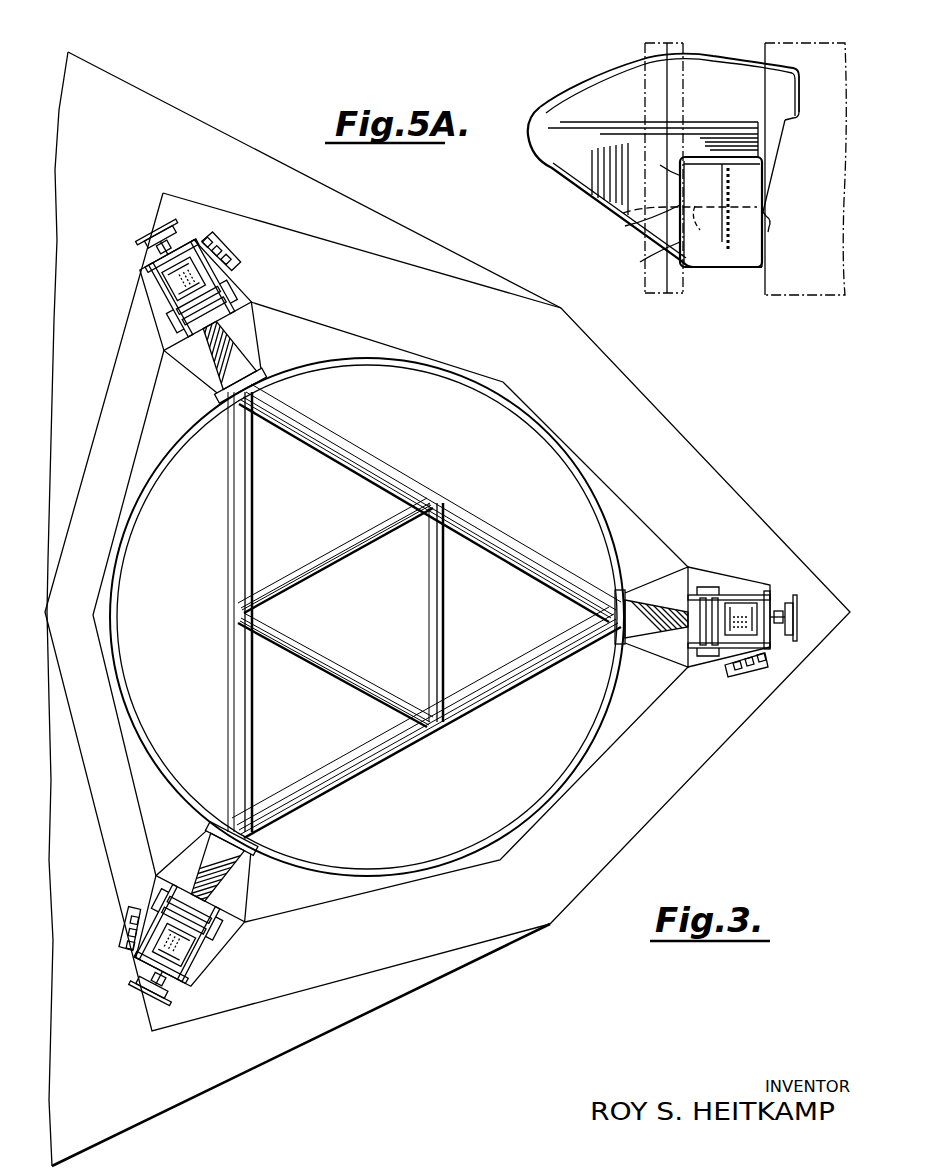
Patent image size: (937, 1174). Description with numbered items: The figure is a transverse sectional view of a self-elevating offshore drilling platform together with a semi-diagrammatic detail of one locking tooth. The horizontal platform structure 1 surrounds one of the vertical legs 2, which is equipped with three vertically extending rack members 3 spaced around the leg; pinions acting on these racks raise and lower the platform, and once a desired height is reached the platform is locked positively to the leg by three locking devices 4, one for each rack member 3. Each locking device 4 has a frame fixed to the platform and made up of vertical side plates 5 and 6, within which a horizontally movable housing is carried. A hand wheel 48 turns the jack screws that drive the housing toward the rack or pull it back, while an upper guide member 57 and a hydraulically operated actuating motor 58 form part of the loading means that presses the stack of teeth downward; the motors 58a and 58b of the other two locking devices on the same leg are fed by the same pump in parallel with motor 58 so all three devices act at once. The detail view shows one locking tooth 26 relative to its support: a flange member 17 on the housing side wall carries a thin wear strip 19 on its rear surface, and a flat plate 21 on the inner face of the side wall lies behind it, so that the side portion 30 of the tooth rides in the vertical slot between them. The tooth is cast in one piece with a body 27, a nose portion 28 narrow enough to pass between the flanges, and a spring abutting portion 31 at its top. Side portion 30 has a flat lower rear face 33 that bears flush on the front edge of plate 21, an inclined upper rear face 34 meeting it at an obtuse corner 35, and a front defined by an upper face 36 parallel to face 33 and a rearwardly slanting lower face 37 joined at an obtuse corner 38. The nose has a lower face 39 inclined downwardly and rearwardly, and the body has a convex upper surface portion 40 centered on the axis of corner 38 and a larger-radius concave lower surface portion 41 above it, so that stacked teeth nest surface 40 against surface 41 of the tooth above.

In FIG. 3, the platform structure 1 is at (438, 985).
In FIG. 3, the vertical legs 2 is at (427, 480).
In FIG. 3, the rack members 3 is at (657, 610).
In FIG. 3, the locking device 4 is at (768, 585).
In FIG. 3, the vertical side plate 5 is at (704, 597).
In FIG. 3, the vertical side plate 6 is at (746, 668).
In FIG. 5A, the flange member 17 is at (648, 58).
In FIG. 5A, the wear strip 19 is at (673, 104).
In FIG. 5A, the flat plate 21 is at (849, 80).
In FIG. 3, the locking tooth 26 is at (689, 590).
In FIG. 5A, the locking tooth 26 is at (542, 95).
In FIG. 5A, the body 27 is at (710, 72).
In FIG. 5A, the nose portion 28 is at (541, 125).
In FIG. 5A, the side portion 30 is at (713, 163).
In FIG. 5A, the spring abutting portion 31 is at (795, 93).
In FIG. 5A, the lower rear face 33 is at (766, 247).
In FIG. 5A, the upper rear face 34 is at (766, 175).
In FIG. 5A, the obtuse corner 35 is at (768, 218).
In FIG. 5A, the upper face 36 is at (660, 165).
In FIG. 5A, the lower face 37 is at (657, 257).
In FIG. 5A, the obtuse corner 38 is at (643, 232).
In FIG. 5A, the lower face 39 is at (571, 186).
In FIG. 5A, the convex upper surface portion 40 is at (688, 56).
In FIG. 5A, the concave lower surface portion 41 is at (690, 226).
In FIG. 3, the hand wheel 48 is at (792, 605).
In FIG. 3, the upper guide member 57 is at (702, 654).
In FIG. 3, the actuating motor 58 is at (740, 612).
In FIG. 3, the motor 58a is at (178, 283).
In FIG. 3, the motor 58b is at (175, 946).